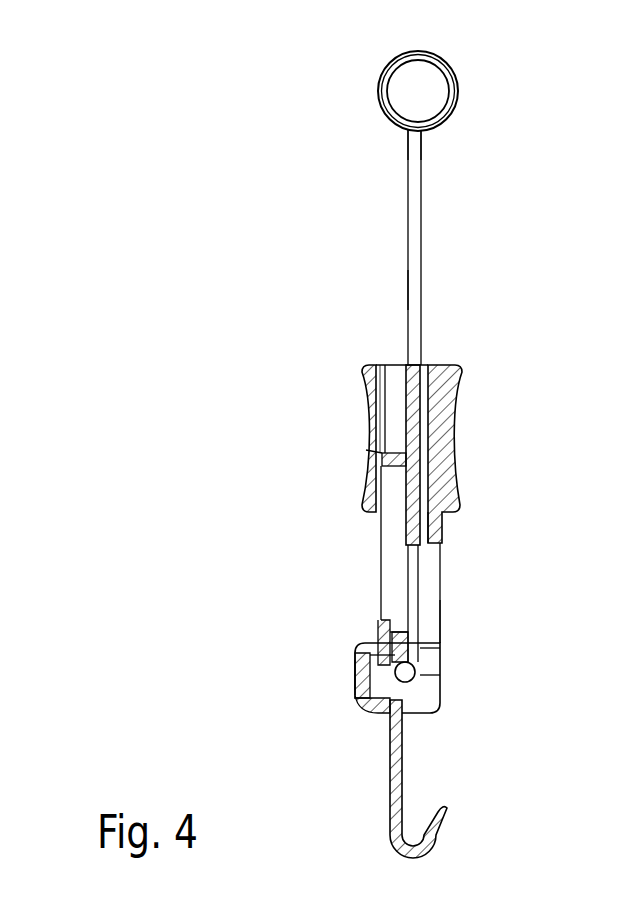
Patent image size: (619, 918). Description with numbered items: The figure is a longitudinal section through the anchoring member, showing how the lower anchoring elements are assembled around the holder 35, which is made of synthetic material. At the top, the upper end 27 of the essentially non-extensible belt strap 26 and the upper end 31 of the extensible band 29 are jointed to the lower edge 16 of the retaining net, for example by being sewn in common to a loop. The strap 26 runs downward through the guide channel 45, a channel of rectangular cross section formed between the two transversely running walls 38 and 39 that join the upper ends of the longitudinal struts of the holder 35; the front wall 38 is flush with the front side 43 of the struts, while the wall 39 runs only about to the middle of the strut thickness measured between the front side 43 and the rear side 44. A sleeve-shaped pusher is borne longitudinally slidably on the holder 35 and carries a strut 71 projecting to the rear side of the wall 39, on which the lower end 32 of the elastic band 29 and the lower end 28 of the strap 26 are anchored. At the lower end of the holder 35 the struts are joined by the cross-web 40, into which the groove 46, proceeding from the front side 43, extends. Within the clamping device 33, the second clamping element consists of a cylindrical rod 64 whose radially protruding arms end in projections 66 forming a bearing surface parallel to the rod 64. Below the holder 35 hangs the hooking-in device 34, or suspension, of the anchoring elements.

The lower edge 16 is at (430, 93).
The belt strap 26 is at (422, 272).
The upper end of belt strap 27 is at (423, 137).
The upper end of extensible band 31 is at (408, 138).
The extensible band 29 is at (408, 290).
The guide channel 45 is at (448, 395).
The lower end of extensible band 32 is at (366, 438).
The lower end of belt strap 28 is at (366, 470).
The strut 71 is at (366, 458).
The wall 39 is at (404, 543).
The front wall 38 is at (440, 525).
The rear side 44 is at (380, 563).
The holder 35 is at (372, 598).
The front side 43 is at (443, 575).
The clamping device 33 is at (455, 638).
The cross-web 40 is at (355, 700).
The projections 66 is at (368, 670).
The cylindrical rod 64 is at (440, 667).
The groove 46 is at (418, 675).
The hooking-in device 34 is at (364, 803).